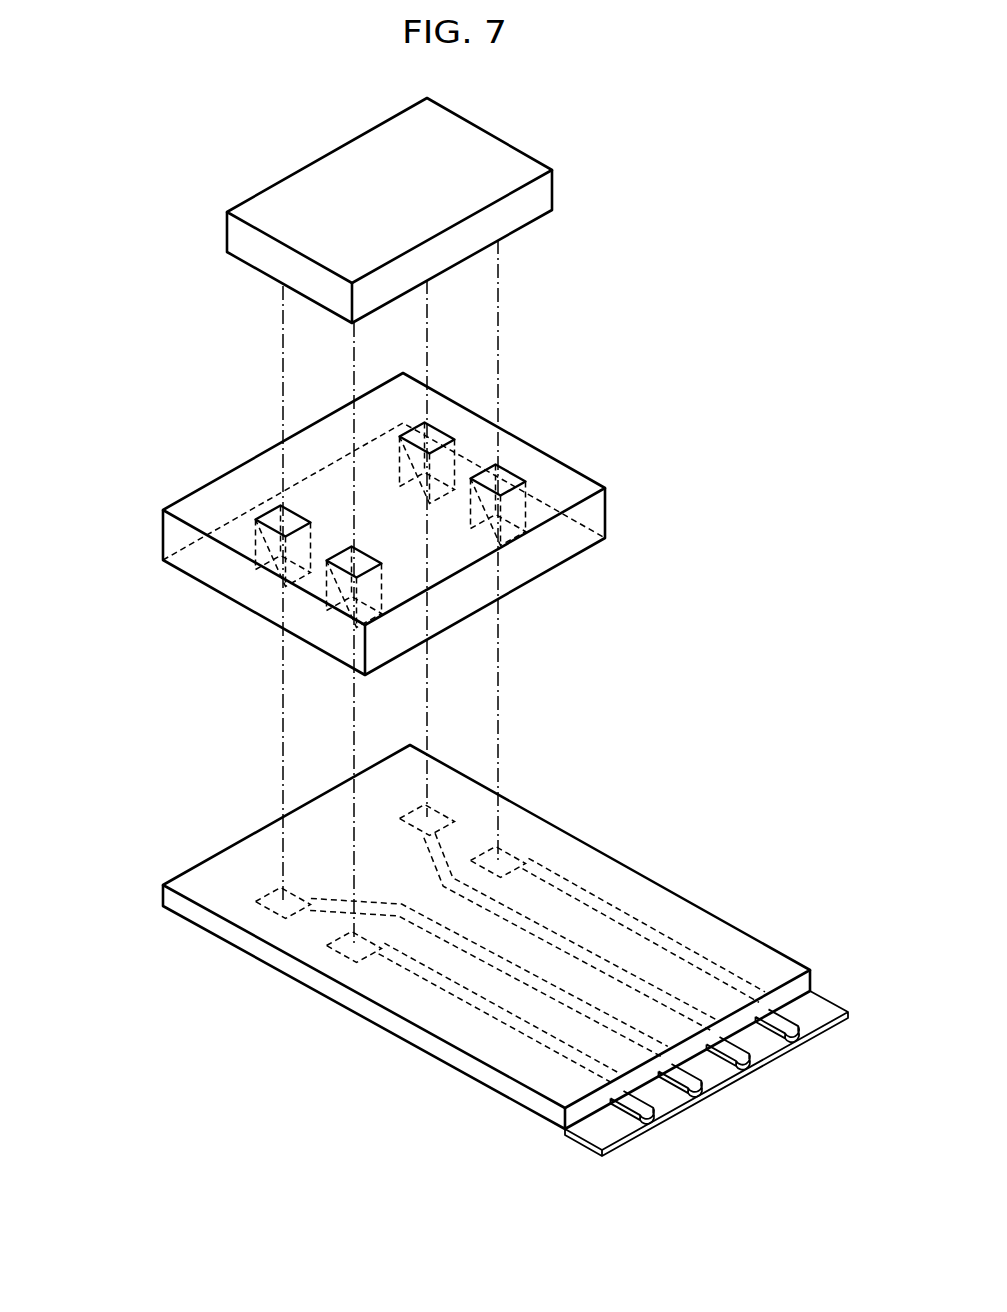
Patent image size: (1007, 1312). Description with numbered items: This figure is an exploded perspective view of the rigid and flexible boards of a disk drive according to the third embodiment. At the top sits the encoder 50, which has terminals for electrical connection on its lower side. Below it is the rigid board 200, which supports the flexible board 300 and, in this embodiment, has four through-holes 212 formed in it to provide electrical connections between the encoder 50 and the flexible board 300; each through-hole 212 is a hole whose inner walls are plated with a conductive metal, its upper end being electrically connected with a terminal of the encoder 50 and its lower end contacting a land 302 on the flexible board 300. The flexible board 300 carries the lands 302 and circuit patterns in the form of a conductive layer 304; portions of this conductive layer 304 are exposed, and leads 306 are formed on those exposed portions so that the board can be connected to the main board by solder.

The encoder 50 is at (508, 160).
The rigid board 200 is at (595, 513).
The through-holes 212 is at (505, 485).
The flexible board 300 is at (213, 867).
The lands 302 is at (510, 867).
The conductive layer 304 is at (638, 942).
The leads 306 is at (800, 1040).